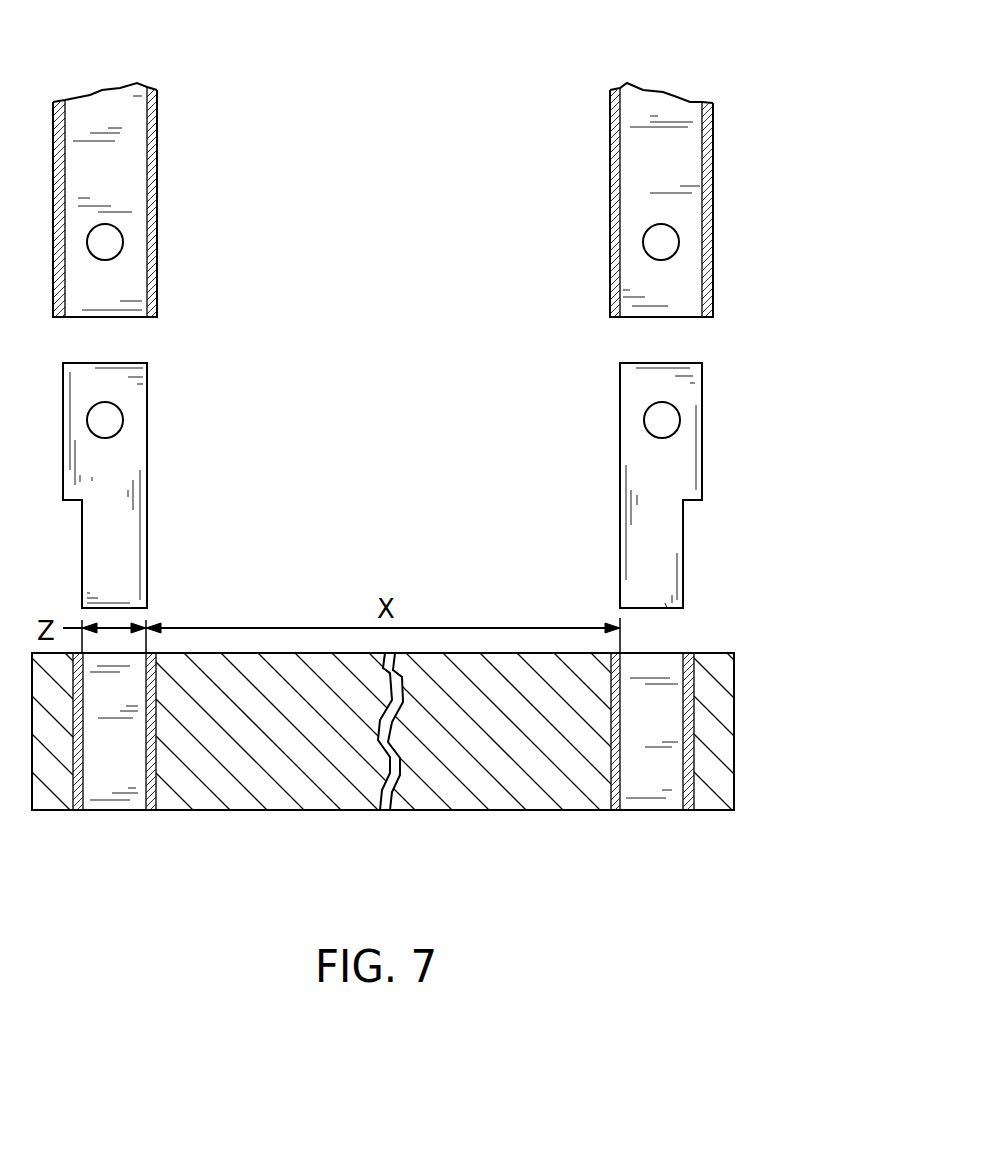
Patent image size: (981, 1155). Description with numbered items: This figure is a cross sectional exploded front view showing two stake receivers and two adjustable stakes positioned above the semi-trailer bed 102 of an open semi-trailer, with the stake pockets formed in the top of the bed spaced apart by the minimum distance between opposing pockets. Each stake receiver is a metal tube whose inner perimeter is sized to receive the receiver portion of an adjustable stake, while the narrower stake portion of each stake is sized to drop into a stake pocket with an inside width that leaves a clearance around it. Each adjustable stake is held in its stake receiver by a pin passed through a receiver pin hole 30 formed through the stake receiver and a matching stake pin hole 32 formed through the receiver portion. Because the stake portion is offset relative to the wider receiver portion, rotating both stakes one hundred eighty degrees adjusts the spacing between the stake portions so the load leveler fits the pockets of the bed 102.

The receiver pin hole 30 is at (679, 246).
The stake pin hole 32 is at (678, 422).
The semi-trailer bed 102 is at (734, 760).